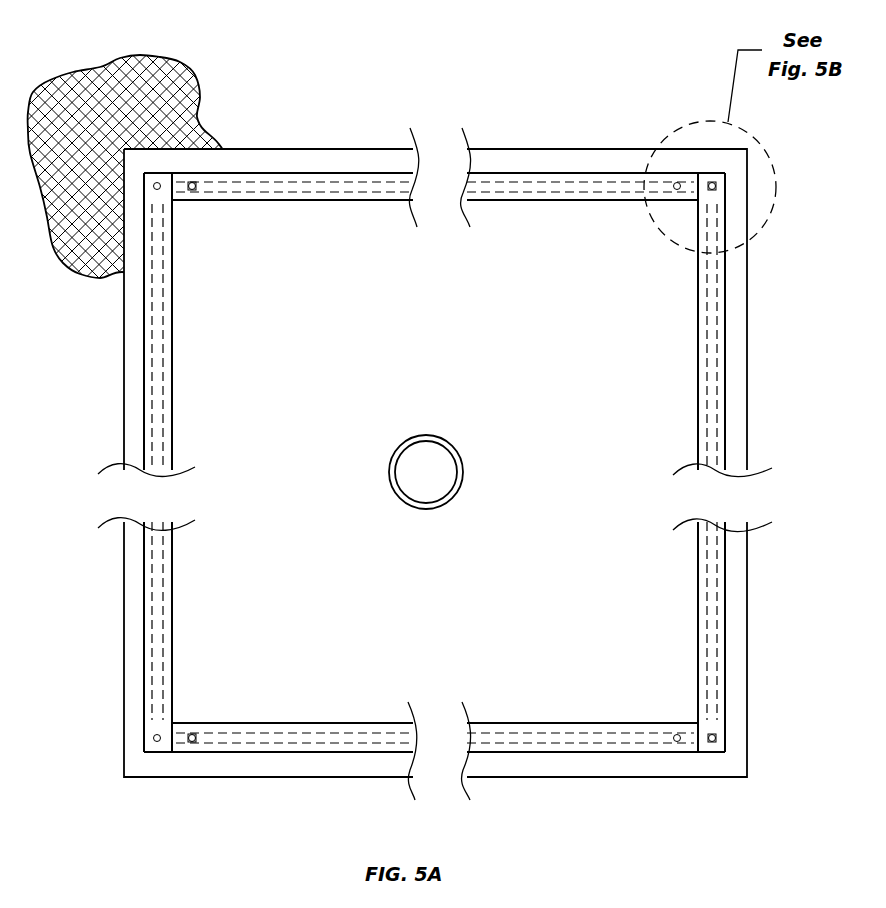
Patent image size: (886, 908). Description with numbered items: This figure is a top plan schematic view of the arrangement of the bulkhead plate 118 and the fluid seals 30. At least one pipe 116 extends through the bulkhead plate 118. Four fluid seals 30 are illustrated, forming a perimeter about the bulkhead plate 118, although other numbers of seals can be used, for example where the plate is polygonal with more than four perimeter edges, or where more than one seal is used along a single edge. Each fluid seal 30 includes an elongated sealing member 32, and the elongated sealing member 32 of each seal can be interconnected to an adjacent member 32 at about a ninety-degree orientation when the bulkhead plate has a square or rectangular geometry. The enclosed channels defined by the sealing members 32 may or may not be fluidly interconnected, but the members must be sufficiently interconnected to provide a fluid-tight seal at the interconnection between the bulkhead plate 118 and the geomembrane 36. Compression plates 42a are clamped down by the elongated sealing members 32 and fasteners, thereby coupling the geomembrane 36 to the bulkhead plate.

The fluid seal 30 is at (604, 164).
The elongated sealing member 32 is at (530, 185).
The geomembrane 36 is at (187, 62).
The compression plate 42a is at (313, 162).
The pipe 116 is at (463, 470).
The bulkhead plate 118 is at (580, 627).